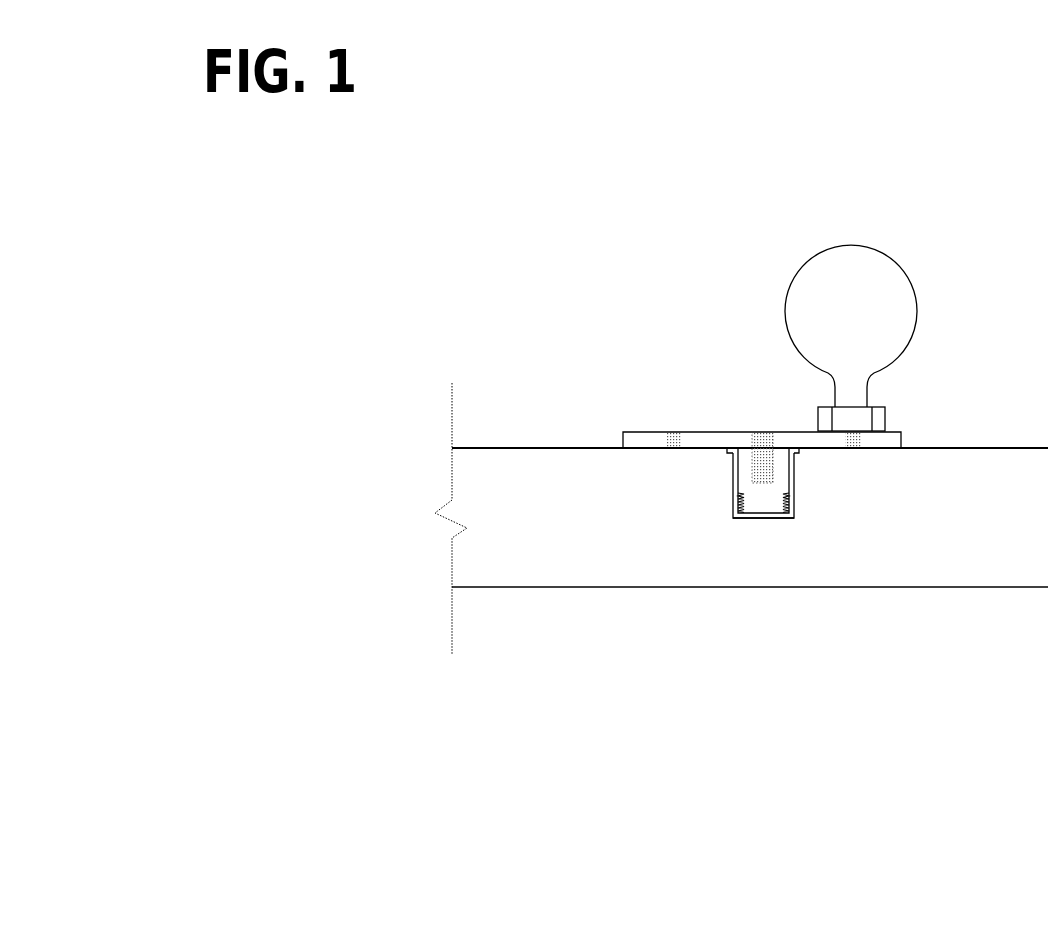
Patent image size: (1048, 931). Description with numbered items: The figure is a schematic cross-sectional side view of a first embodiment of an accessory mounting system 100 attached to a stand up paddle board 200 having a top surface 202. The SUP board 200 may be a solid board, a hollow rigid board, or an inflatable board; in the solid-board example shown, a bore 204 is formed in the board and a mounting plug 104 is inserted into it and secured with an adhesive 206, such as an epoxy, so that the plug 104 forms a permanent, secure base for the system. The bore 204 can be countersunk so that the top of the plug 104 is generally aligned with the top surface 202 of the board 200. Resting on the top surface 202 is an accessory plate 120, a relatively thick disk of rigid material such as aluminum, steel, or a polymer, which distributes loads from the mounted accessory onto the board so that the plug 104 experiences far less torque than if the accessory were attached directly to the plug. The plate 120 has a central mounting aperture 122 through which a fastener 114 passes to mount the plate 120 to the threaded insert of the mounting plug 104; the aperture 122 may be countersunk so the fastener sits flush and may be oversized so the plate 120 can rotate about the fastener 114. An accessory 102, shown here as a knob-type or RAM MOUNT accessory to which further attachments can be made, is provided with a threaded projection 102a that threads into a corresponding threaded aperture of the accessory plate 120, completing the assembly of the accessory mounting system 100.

The accessory mounting system 100 is at (777, 430).
The accessory 102 is at (817, 300).
The threaded projection 102a is at (855, 443).
The mounting plug 104 is at (773, 505).
The fastener 114 is at (762, 438).
The accessory plate 120 is at (705, 437).
The central mounting aperture 122 is at (670, 433).
The stand up paddle board 200 is at (741, 497).
The top surface 202 is at (598, 447).
The bore 204 is at (738, 518).
The adhesive 206 is at (762, 517).